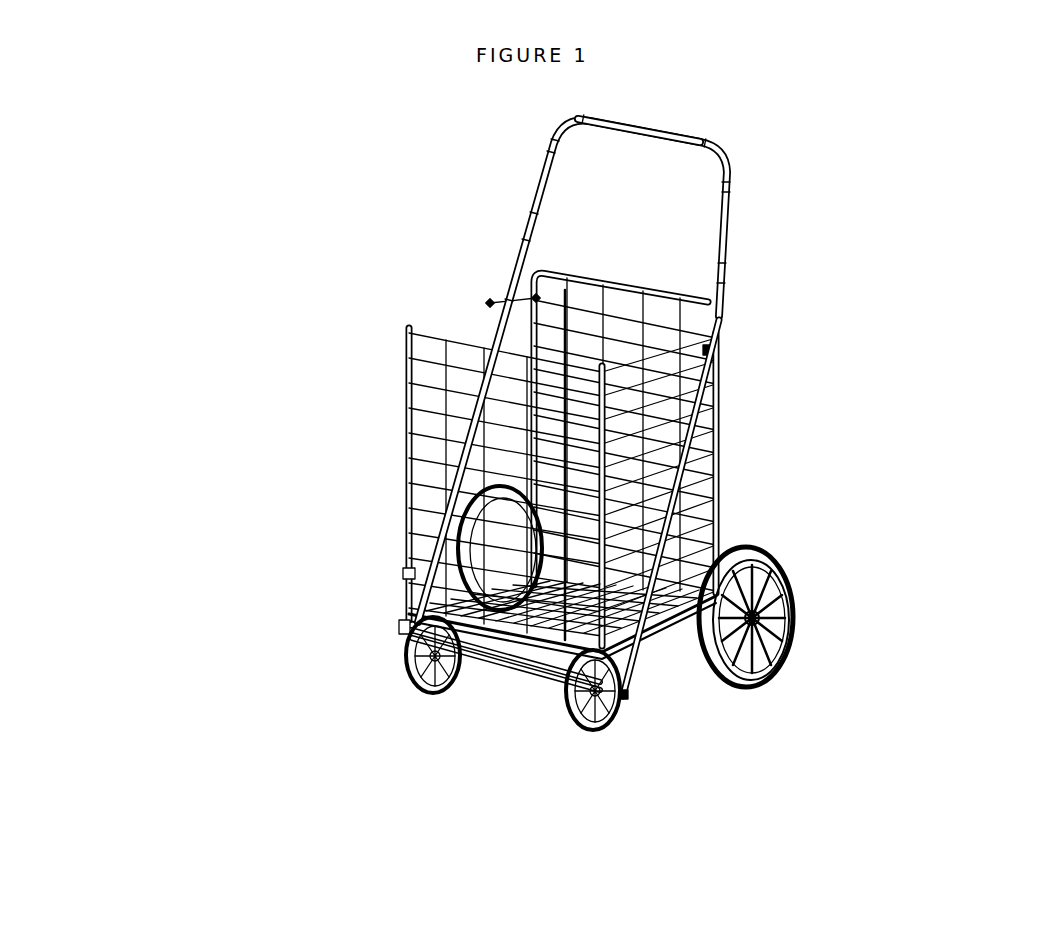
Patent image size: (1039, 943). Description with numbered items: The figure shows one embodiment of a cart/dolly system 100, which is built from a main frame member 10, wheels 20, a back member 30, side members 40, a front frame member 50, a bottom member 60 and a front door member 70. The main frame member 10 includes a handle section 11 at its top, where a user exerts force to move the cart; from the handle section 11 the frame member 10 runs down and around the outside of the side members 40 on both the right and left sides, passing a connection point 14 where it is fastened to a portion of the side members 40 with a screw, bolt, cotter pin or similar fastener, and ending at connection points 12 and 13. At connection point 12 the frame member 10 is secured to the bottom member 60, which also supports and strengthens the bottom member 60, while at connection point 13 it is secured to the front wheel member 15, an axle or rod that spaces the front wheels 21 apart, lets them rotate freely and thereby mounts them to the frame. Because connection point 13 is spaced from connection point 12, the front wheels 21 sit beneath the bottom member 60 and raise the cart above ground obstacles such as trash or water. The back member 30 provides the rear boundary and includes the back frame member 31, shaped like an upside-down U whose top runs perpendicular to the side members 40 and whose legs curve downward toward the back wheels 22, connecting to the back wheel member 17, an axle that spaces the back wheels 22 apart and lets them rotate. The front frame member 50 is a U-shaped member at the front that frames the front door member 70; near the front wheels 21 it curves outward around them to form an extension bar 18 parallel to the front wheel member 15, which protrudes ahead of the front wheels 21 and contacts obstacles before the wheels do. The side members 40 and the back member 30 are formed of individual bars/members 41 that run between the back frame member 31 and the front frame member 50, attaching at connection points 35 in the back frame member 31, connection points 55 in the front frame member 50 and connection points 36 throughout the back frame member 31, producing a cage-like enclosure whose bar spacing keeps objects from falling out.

The cart/dolly system 100 is at (842, 337).
The main frame member 10 is at (752, 157).
The handle section 11 is at (652, 133).
The back member 30 is at (735, 313).
The back frame member 31 is at (530, 271).
The connection points 36 is at (612, 282).
The individual bars/members 41 is at (490, 338).
The connection point 14 is at (708, 350).
The connection points 35 is at (724, 447).
The side members 40 is at (395, 393).
The connection points 55 is at (402, 413).
The front frame member 50 is at (405, 496).
The front door member 70 is at (395, 574).
The bottom member 60 is at (688, 590).
The connection point 12 is at (637, 643).
The connection point 13 is at (627, 694).
The front wheel member 15 is at (498, 668).
The extension bar 18 is at (402, 630).
The wheels 20 is at (612, 732).
The front wheels 21 is at (588, 730).
The back wheel member 17 is at (790, 607).
The back wheels 22 is at (790, 632).